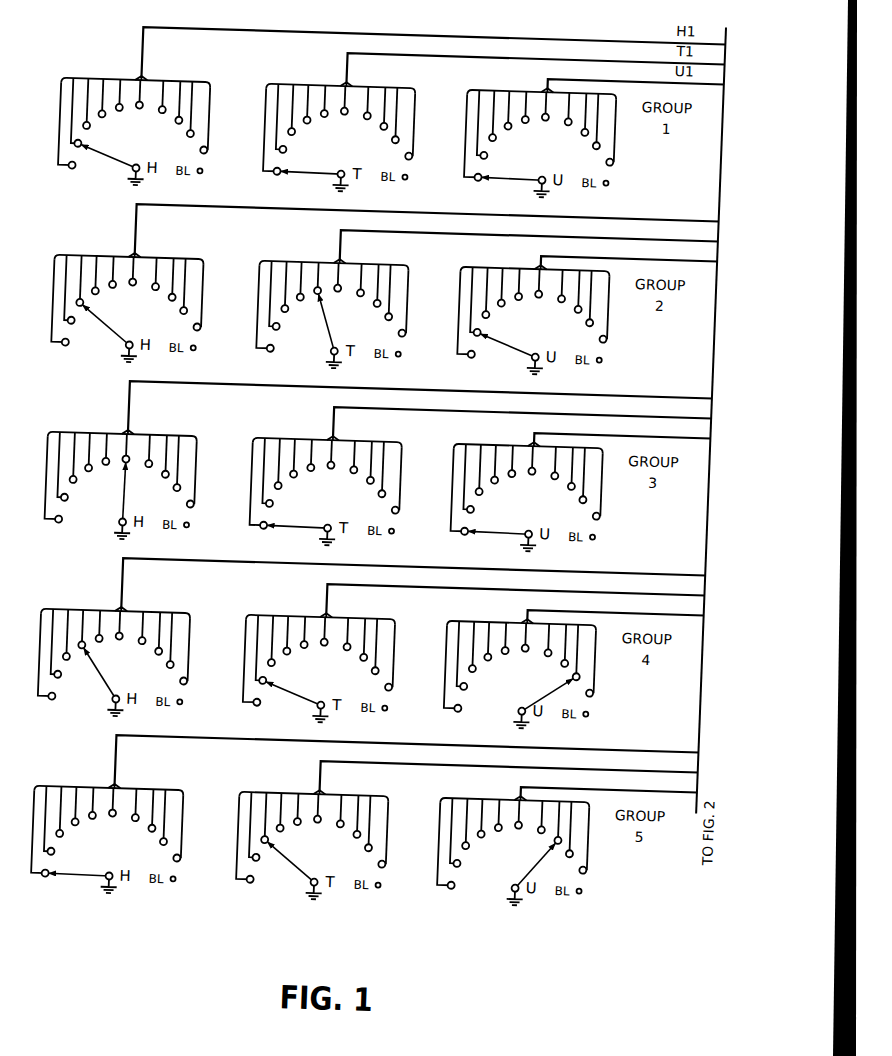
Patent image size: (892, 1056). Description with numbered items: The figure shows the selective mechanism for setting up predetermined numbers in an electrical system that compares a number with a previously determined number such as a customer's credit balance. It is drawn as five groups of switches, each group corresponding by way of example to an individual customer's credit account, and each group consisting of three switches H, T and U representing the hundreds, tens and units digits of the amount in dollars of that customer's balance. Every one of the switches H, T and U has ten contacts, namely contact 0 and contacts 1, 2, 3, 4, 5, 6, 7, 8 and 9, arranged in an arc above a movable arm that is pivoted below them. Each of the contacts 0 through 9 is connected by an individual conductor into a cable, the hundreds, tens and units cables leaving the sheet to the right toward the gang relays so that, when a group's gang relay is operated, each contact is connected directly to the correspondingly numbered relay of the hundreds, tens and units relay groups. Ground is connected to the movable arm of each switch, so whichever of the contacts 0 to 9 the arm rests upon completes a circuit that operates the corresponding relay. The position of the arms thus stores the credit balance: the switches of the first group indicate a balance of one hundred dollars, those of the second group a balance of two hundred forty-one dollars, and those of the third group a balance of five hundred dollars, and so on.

The contact 0 is at (263, 489).
The contact 1 is at (269, 476).
The contact 2 is at (280, 470).
The contact 3 is at (295, 466).
The contact 4 is at (311, 462).
The contact 5 is at (324, 462).
The contact 6 is at (349, 463).
The contact 7 is at (366, 468).
The contact 8 is at (376, 473).
The contact 9 is at (387, 482).